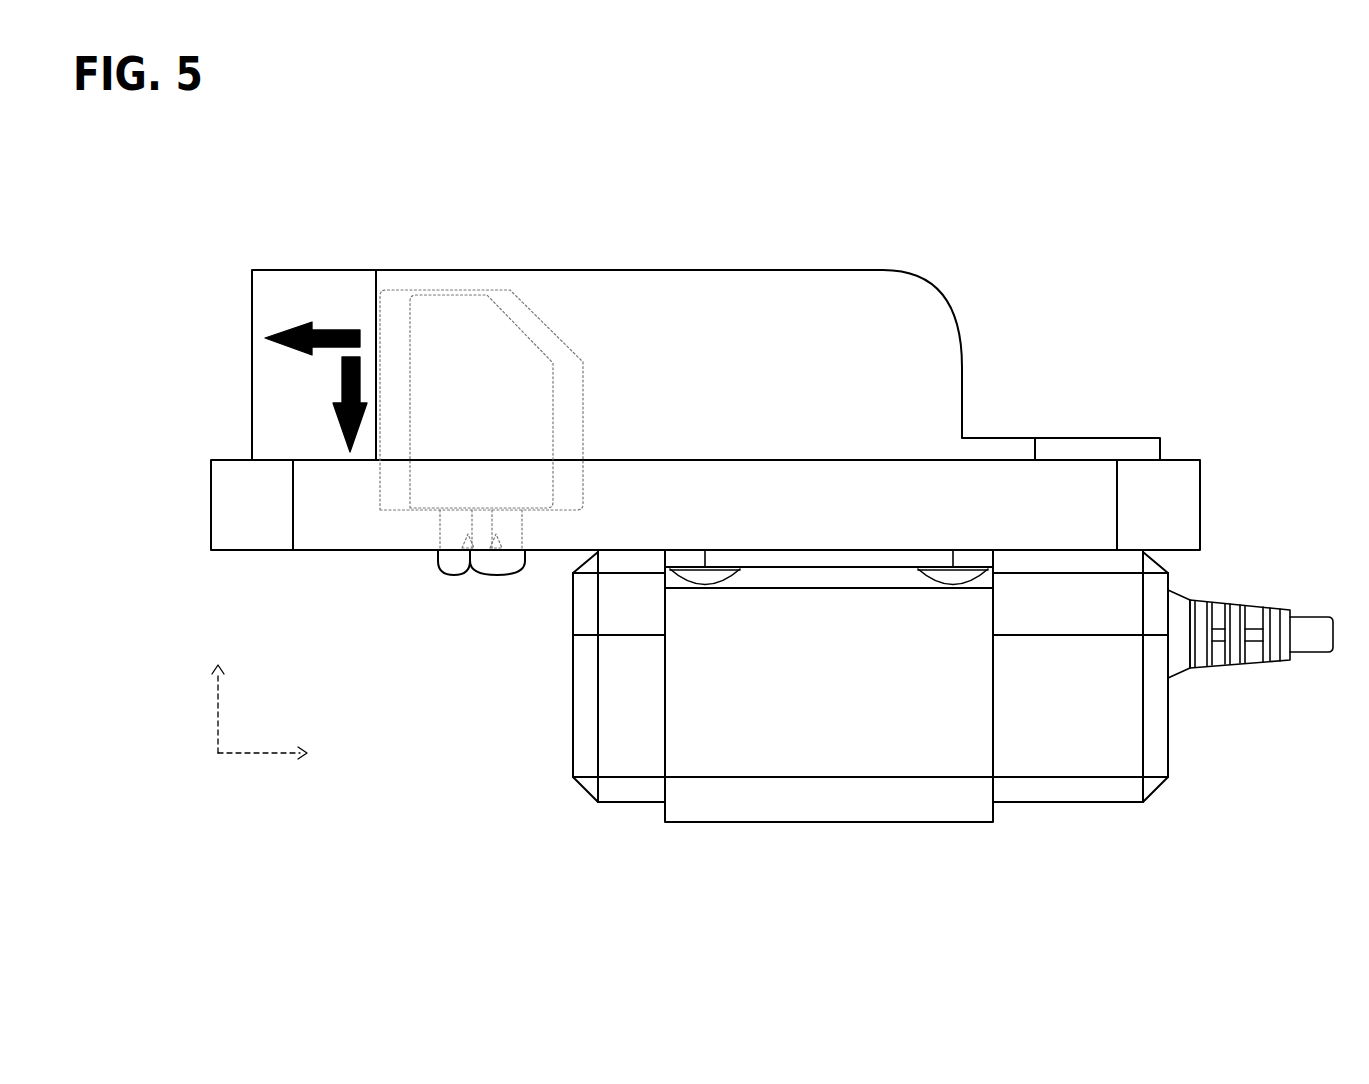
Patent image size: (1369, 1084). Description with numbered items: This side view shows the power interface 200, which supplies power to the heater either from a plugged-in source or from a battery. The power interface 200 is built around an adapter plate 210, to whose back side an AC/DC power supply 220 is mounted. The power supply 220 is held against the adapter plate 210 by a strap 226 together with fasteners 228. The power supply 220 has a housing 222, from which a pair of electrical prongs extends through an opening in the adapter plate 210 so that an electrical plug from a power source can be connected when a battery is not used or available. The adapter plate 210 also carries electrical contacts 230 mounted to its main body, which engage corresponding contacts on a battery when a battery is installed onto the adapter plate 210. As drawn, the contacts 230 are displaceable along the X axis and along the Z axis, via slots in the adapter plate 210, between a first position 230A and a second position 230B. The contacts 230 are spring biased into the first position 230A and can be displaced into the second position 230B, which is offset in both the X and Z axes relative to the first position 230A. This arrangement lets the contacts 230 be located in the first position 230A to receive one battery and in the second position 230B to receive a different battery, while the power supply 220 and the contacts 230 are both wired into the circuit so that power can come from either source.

The power interface 200 is at (192, 213).
The adapter plate 210 is at (228, 540).
The AC/DC power supply 220 is at (423, 427).
The housing 222 is at (1085, 752).
The strap 226 is at (863, 772).
The fasteners 228 is at (665, 590).
The electrical contacts 230 is at (520, 560).
The first position 230A is at (492, 568).
The second position 230B is at (453, 562).